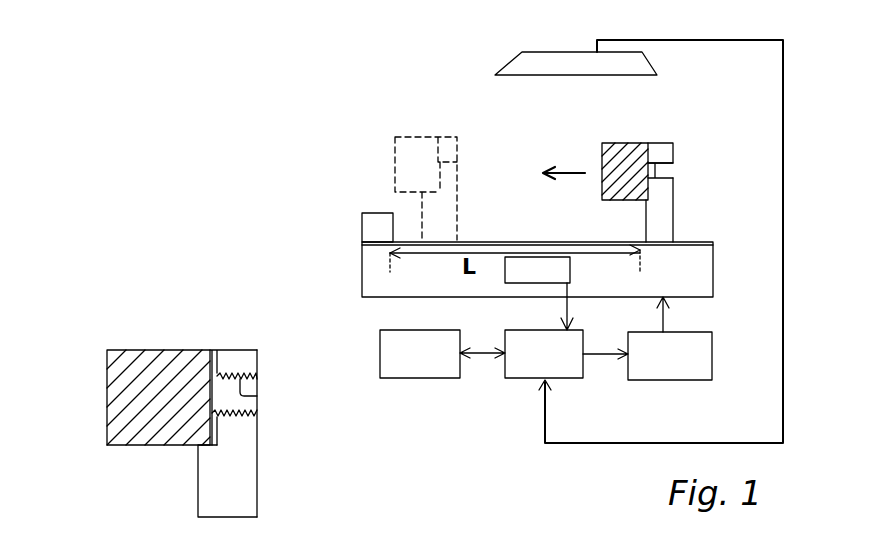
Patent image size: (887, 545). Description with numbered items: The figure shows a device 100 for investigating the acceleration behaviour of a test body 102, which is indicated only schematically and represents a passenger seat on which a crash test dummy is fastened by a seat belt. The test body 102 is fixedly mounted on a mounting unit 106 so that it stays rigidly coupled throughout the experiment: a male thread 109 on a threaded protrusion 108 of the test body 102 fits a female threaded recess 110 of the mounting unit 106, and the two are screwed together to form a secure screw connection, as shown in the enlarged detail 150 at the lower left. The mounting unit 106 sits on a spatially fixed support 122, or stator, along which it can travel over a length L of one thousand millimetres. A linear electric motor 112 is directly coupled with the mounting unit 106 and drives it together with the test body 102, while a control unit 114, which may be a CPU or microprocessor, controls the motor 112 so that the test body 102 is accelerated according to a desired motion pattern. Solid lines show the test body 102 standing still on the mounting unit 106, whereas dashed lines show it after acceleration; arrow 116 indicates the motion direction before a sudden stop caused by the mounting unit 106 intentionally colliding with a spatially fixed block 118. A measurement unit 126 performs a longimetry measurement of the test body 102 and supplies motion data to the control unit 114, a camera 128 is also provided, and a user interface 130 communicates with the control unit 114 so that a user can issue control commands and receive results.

The device 100 is at (238, 28).
The test body 102 is at (134, 336).
The mounting unit 106 is at (266, 474).
The threaded protrusion 108 is at (257, 408).
The male thread 109 is at (258, 390).
The female threaded recess 110 is at (244, 349).
The linear electric motor 112 is at (660, 381).
The control unit 114 is at (532, 379).
The arrow 116 is at (566, 178).
The spatially fixed block 118 is at (360, 232).
The support 122 is at (362, 297).
The measurement unit 126 is at (505, 265).
The camera 128 is at (522, 52).
The user interface 130 is at (420, 379).
The detail 150 is at (72, 331).